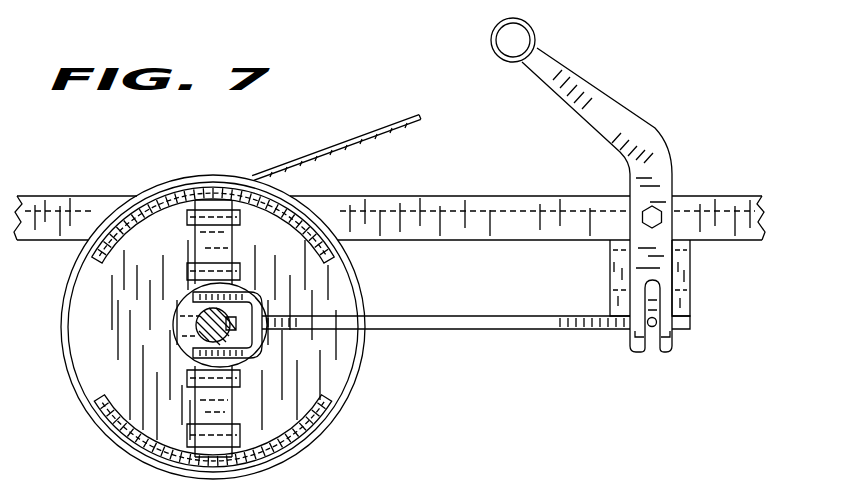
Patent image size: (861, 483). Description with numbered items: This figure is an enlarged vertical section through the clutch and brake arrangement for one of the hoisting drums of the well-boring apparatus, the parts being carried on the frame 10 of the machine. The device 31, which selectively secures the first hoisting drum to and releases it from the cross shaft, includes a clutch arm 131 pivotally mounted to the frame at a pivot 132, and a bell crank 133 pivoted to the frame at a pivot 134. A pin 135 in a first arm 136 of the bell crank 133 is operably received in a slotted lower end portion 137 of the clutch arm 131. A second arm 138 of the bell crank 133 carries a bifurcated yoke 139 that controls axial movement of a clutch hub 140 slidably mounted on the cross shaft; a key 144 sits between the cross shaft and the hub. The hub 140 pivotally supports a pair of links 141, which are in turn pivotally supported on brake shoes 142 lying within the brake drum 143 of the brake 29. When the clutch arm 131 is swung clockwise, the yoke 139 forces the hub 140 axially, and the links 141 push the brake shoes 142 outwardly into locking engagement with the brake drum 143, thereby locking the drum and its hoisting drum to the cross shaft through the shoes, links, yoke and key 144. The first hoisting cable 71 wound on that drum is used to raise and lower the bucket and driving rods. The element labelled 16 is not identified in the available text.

The frame 10 is at (455, 194).
The shaft 16 is at (205, 320).
The brake 29 is at (362, 291).
The device 31 is at (493, 46).
The first hoisting cable 71 is at (363, 148).
The clutch arm 131 is at (615, 106).
The pivot 132 is at (654, 206).
The bell crank 133 is at (522, 330).
The pivot 134 is at (652, 338).
The pin 135 is at (657, 320).
The first arm 136 is at (688, 330).
The slotted lower end portion 137 is at (663, 300).
The second arm 138 is at (408, 318).
The bifurcated yoke 139 is at (265, 355).
The clutch hub 140 is at (178, 345).
The link 141 is at (230, 241).
The brake shoe 142 is at (140, 221).
The brake drum 143 is at (358, 390).
The key 144 is at (236, 320).